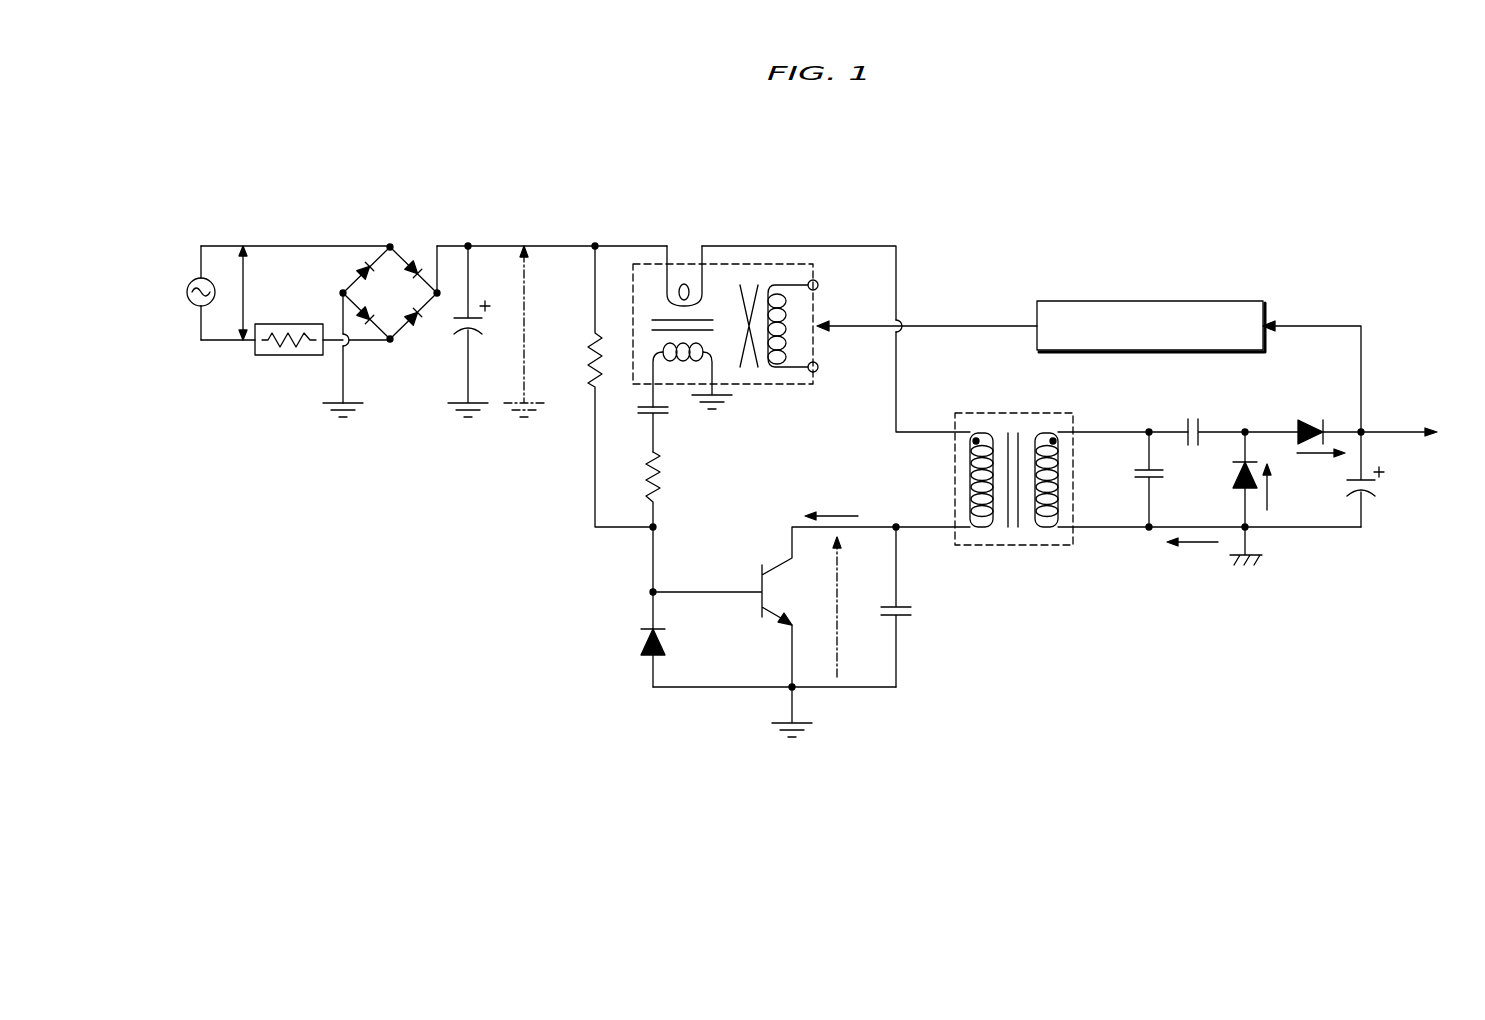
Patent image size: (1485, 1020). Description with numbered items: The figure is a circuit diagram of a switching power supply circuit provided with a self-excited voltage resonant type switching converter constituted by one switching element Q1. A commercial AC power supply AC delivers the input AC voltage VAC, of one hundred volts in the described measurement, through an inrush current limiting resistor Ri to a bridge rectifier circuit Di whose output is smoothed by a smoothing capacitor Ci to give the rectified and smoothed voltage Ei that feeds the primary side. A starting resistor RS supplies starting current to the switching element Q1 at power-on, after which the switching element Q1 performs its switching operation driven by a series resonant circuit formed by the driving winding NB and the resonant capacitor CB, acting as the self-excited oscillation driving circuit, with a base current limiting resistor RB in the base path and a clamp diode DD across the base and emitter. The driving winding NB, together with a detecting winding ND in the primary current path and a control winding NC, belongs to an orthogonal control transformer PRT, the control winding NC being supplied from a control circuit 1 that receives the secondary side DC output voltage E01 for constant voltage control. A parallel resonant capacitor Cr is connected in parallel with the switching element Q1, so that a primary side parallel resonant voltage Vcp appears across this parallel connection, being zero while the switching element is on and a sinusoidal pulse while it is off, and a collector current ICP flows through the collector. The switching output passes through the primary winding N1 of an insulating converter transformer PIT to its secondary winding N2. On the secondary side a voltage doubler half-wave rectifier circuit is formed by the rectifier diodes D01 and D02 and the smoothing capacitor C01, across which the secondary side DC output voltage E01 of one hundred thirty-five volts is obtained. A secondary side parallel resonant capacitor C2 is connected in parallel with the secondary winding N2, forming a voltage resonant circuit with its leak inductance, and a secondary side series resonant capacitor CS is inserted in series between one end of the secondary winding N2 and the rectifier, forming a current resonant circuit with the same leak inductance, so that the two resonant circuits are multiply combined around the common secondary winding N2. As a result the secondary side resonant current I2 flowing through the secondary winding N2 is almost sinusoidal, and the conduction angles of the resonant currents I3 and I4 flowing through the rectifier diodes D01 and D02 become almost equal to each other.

The control circuit 1 is at (1152, 300).
The commercial AC power supply AC is at (185, 293).
The input AC voltage VAC is at (246, 293).
The inrush current limiting resistor Ri is at (272, 353).
The bridge rectifier circuit Di is at (381, 330).
The smoothing capacitor Ci is at (472, 331).
The rectified and smoothed voltage Ei is at (524, 331).
The starting resistor RS is at (604, 386).
The orthogonal control transformer PRT is at (723, 340).
The detecting winding ND is at (680, 272).
The driving winding NB is at (680, 375).
The control winding NC is at (795, 333).
The resonant capacitor CB is at (636, 427).
The base current limiting resistor RB is at (636, 522).
The clamp diode DD is at (634, 638).
The switching element Q1 is at (776, 605).
The collector current ICP is at (831, 503).
The primary side parallel resonant voltage Vcp is at (839, 607).
The parallel resonant capacitor Cr is at (911, 607).
The insulating converter transformer PIT is at (1014, 465).
The primary winding N1 is at (968, 470).
The secondary winding N2 is at (1060, 470).
The secondary side parallel resonant capacitor C2 is at (1160, 479).
The secondary side series resonant capacitor CS is at (1239, 418).
The rectifier diode D01 is at (1327, 417).
The rectifier diode D02 is at (1225, 498).
The resonant current I3 is at (1321, 466).
The resonant current I4 is at (1280, 487).
The secondary side resonant current I2 is at (1192, 555).
The smoothing capacitor C01 is at (1389, 479).
The secondary side DC output voltage E01 is at (1422, 433).